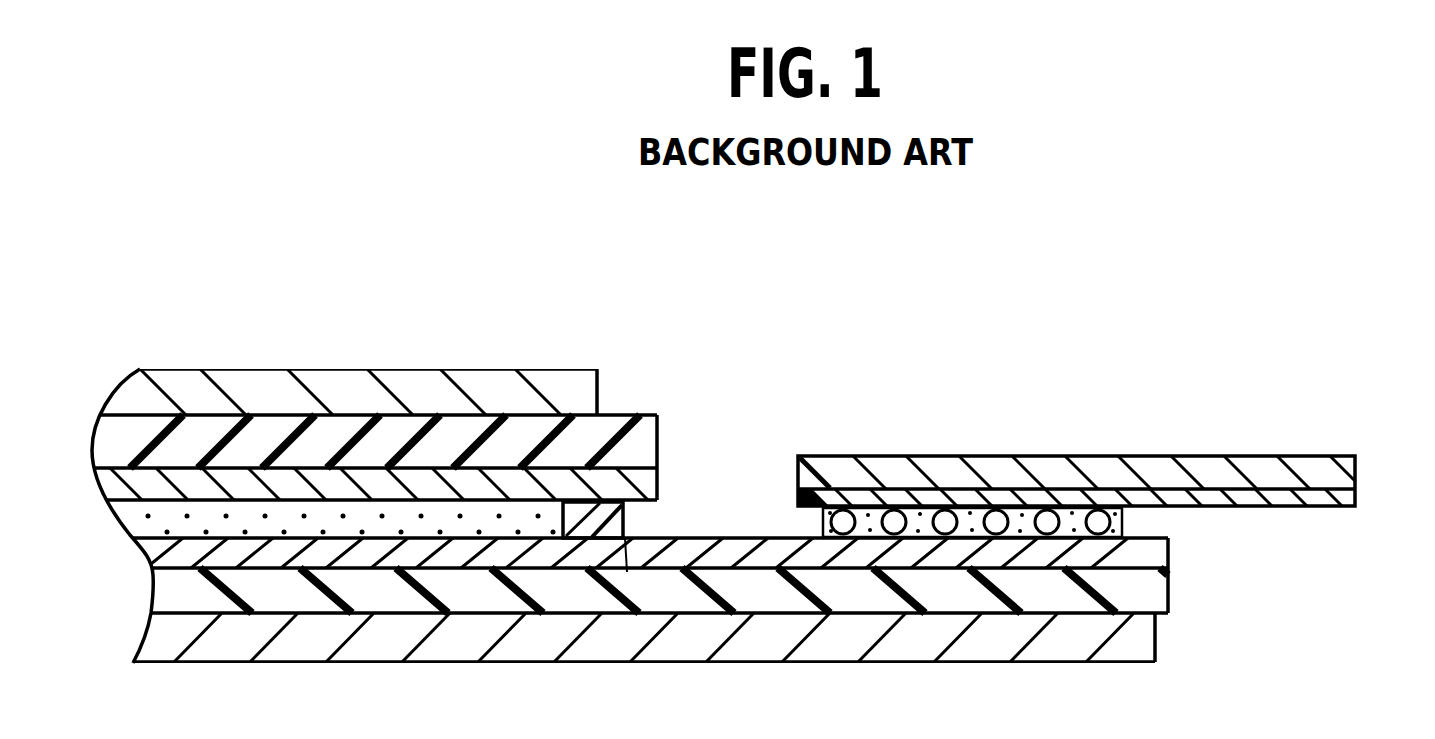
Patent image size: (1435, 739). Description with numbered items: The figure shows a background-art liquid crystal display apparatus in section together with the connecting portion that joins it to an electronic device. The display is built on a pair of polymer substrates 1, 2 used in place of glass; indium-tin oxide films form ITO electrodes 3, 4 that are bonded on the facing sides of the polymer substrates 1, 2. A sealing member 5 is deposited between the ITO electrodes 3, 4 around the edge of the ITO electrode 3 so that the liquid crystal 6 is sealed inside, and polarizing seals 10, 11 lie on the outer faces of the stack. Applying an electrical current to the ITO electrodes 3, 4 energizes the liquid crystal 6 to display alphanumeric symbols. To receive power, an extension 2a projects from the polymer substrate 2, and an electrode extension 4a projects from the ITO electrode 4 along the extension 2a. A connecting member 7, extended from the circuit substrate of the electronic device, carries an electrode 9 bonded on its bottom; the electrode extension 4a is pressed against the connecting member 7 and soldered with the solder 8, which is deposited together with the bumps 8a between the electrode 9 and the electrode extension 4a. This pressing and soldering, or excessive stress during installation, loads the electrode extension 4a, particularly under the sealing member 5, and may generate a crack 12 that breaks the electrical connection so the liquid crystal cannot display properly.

The polymer substrate 1 is at (407, 437).
The polymer substrate 2 is at (464, 592).
The extension 2a is at (1157, 603).
The ITO electrode 3 is at (658, 482).
The ITO electrode 4 is at (262, 552).
The electrode extension 4a is at (1165, 548).
The sealing member 5 is at (627, 522).
The liquid crystal 6 is at (295, 512).
The connecting member 7 is at (935, 455).
The solder 8 is at (1123, 515).
The bumps 8a is at (1098, 505).
The electrode 9 is at (1048, 498).
The polarizing seal 10 is at (498, 378).
The polarizing seal 11 is at (523, 647).
The crack 12 is at (628, 572).